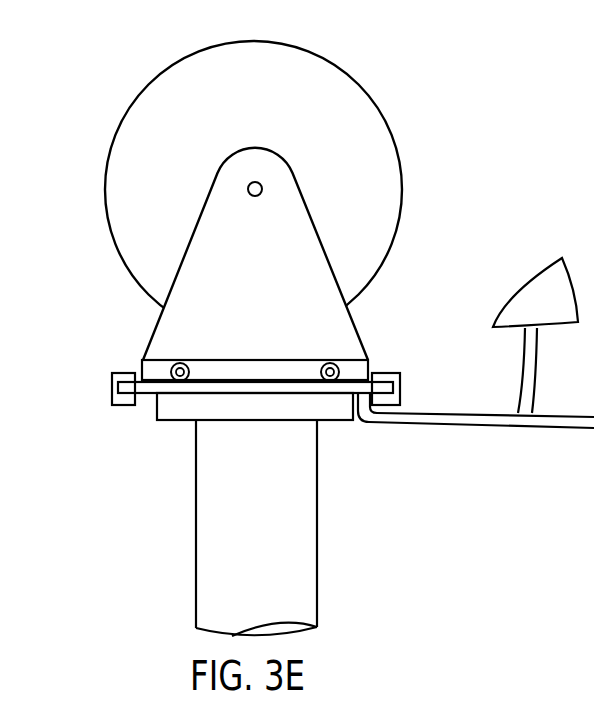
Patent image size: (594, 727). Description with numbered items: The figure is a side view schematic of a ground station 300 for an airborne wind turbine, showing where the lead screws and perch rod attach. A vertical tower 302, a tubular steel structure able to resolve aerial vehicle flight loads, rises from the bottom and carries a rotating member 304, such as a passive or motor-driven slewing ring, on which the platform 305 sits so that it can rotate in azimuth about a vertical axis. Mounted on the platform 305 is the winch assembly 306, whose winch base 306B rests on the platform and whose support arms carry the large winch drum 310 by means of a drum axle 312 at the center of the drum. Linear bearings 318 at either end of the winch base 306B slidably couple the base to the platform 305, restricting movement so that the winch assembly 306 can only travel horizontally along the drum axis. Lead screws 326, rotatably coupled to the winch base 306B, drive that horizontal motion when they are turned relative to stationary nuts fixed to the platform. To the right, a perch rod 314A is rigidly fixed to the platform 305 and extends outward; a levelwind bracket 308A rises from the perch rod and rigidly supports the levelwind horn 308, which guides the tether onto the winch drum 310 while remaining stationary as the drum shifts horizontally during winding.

The ground station 300 is at (378, 75).
The vertical tower 302 is at (195, 578).
The rotating member 304 is at (170, 420).
The platform 305 is at (148, 393).
The winch assembly 306 is at (102, 267).
The winch base 306B is at (243, 358).
The levelwind horn 308 is at (560, 257).
The levelwind bracket 308A is at (525, 372).
The winch drum 310 is at (403, 188).
The drum axle 312 is at (257, 182).
The perch rod 314A is at (473, 423).
The linear bearings 318 is at (120, 407).
The lead screws 326 is at (172, 367).